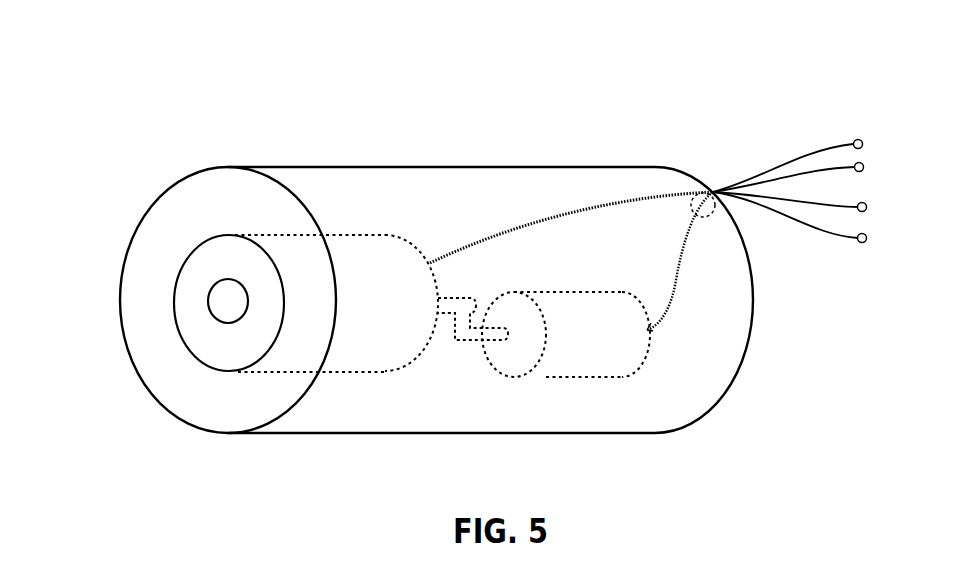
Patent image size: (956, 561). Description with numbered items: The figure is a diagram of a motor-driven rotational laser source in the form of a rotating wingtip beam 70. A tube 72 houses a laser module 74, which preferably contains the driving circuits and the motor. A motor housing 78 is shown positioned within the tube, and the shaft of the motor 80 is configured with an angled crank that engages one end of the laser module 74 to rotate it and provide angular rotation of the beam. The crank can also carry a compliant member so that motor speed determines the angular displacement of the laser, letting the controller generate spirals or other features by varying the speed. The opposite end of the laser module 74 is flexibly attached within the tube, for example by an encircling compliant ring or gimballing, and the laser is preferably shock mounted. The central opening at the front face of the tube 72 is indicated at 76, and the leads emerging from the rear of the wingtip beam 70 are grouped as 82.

The rotating wingtip beam 70 is at (128, 152).
The tube 72 is at (411, 166).
The laser module 74 is at (373, 357).
The central bore / fiber port 76 is at (207, 305).
The motor housing 78 is at (585, 357).
The shaft of the motor 80 is at (463, 342).
The fiber leads 82 is at (881, 125).